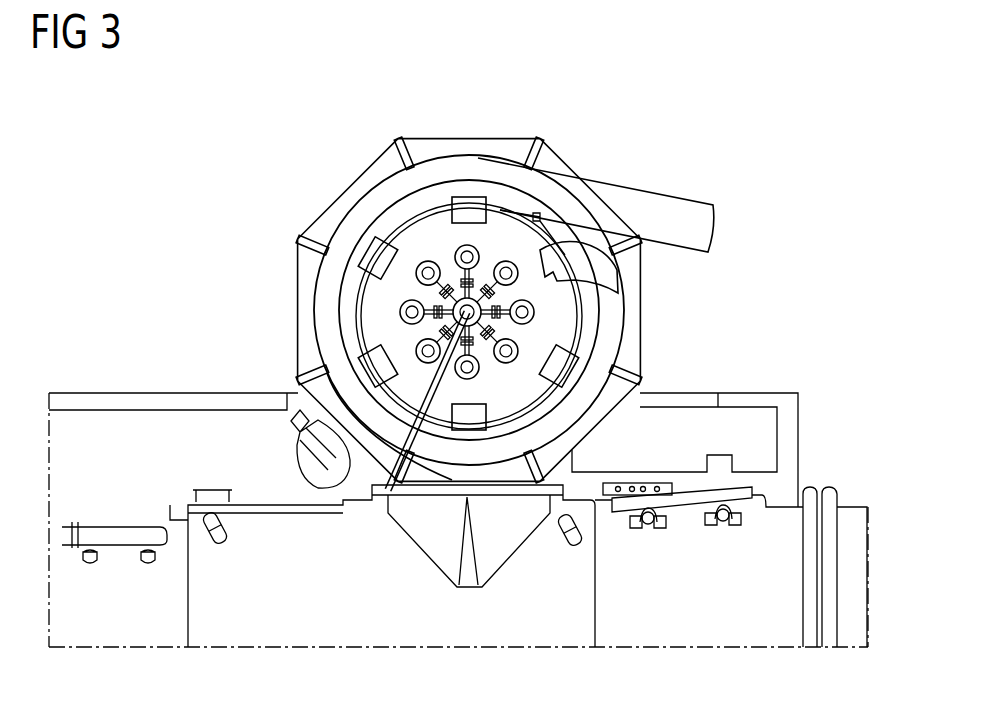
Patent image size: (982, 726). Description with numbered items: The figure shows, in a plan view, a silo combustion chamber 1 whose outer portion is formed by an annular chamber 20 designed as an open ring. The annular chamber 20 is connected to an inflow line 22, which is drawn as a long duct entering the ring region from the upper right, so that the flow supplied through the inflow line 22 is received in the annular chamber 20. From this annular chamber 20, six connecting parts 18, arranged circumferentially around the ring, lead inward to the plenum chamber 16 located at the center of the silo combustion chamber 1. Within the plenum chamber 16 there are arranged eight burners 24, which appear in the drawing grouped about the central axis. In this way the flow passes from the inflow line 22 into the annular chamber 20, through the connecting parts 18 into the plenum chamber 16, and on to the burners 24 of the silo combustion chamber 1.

The silo combustion chamber 1 is at (260, 156).
The plenum chamber 16 is at (552, 329).
The connecting parts 18 is at (465, 197).
The annular chamber 20 is at (330, 283).
The inflow line 22 is at (655, 196).
The burners 24 is at (466, 244).